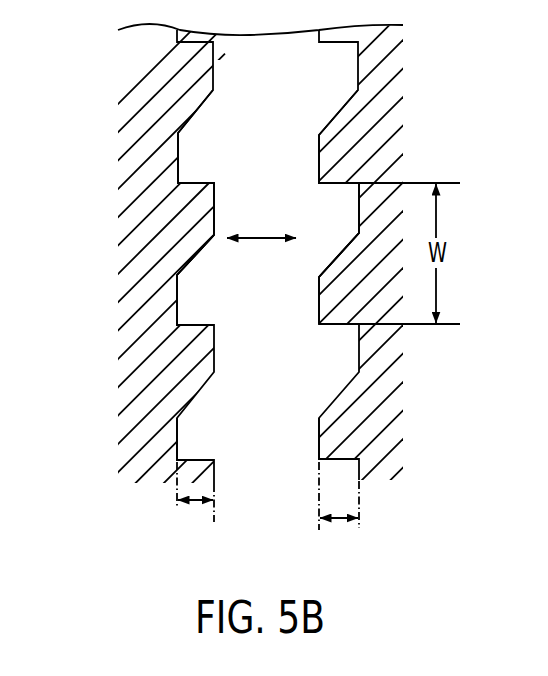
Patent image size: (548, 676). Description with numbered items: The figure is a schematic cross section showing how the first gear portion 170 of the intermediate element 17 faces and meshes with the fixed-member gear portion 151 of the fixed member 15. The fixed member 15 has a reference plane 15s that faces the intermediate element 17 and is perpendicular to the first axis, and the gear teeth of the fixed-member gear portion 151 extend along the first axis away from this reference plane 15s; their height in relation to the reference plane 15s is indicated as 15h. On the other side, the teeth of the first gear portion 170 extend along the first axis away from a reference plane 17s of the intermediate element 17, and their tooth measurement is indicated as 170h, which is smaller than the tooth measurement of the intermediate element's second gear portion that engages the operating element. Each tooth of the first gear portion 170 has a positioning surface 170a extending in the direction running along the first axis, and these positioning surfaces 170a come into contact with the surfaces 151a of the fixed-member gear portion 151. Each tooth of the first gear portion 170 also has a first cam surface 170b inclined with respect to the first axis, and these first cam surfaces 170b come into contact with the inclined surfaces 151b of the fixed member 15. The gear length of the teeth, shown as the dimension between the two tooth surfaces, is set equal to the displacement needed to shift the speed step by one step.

The fixed member 15 is at (381, 395).
The intermediate element 17 is at (128, 365).
The fixed-member gear portion 151 is at (318, 150).
The surfaces facing the gear portion of the fixed member 151a is at (325, 184).
The surfaces of the fixed member 151b is at (330, 256).
The first gear portion 170 is at (218, 221).
The positioning surfaces 170a is at (197, 181).
The first cam surfaces 170b is at (197, 255).
The tooth measurement of the gear teeth of the first gear portion 170h is at (197, 503).
The reference plane 17s is at (185, 475).
The reference plane of the fixed member 15s is at (363, 478).
The height of the gear teeth 15h is at (338, 522).